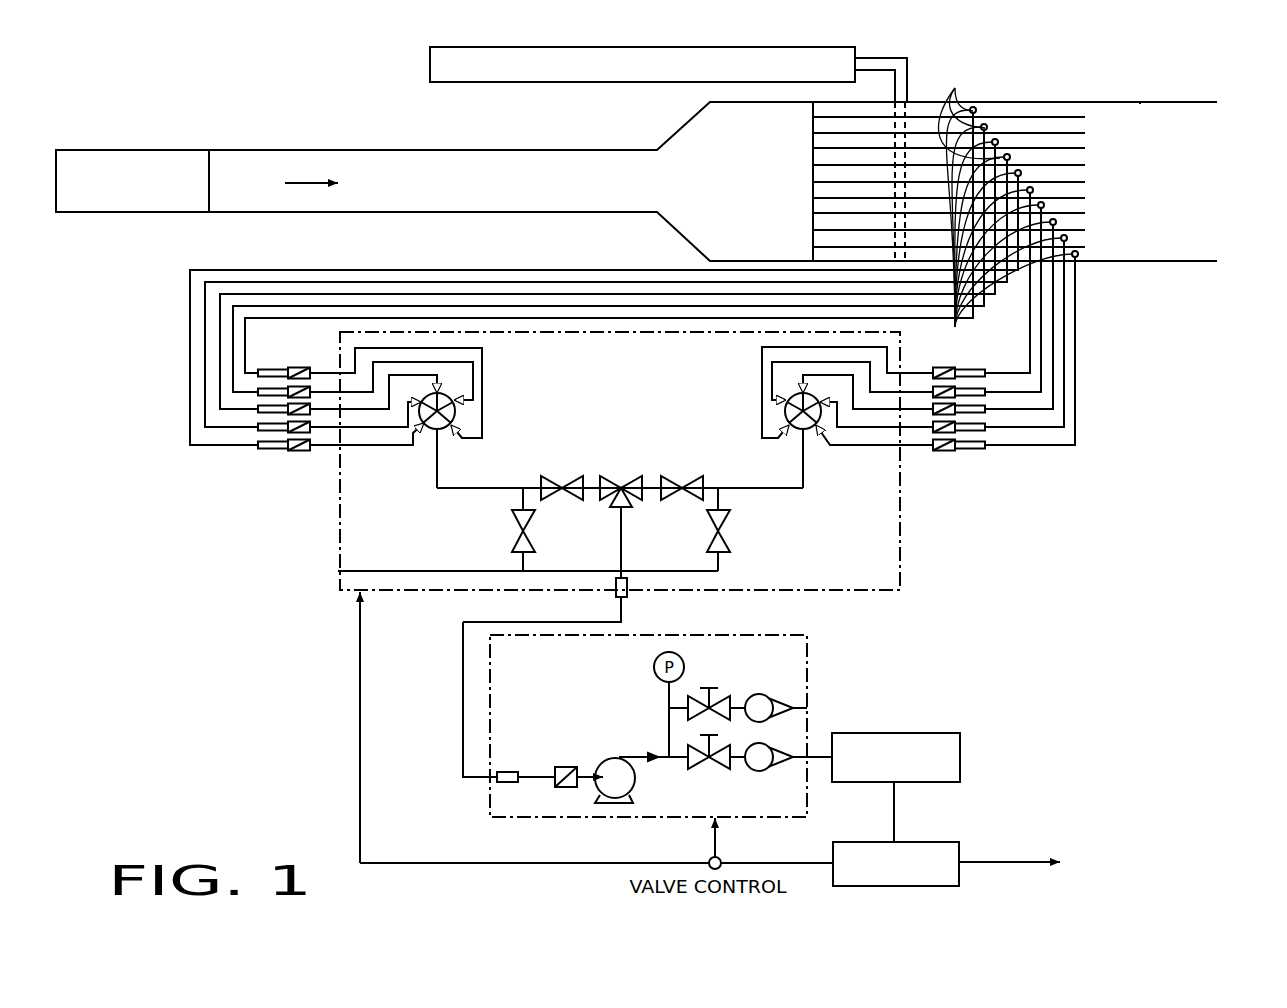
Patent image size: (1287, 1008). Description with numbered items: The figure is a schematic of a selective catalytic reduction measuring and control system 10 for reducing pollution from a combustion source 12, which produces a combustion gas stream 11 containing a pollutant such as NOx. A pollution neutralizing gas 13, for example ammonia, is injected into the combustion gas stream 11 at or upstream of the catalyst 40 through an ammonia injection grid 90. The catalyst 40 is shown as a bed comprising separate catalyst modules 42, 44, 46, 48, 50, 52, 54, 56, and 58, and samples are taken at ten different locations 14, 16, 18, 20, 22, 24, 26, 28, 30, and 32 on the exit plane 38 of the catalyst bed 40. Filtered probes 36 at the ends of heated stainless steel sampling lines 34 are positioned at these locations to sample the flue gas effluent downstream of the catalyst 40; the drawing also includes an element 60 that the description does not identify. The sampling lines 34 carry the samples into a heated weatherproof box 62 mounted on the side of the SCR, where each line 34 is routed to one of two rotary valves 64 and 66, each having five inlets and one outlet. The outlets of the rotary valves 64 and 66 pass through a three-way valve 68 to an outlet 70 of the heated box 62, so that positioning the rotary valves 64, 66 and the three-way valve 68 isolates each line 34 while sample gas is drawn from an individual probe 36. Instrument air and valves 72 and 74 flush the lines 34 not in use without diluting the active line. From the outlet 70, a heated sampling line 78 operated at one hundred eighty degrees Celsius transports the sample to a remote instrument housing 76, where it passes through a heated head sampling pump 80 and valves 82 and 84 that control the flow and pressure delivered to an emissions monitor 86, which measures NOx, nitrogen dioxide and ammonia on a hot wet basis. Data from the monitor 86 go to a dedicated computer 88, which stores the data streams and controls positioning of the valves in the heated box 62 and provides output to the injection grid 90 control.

The selective catalytic reduction measuring and control system 10 is at (947, 673).
The combustion gas stream 11 is at (362, 150).
The combustion source 12 is at (117, 150).
The pollution neutralizing gas 13 is at (430, 68).
The sampling location 14 is at (987, 112).
The sampling location 16 is at (998, 128).
The sampling location 18 is at (1010, 142).
The sampling location 20 is at (1022, 158).
The sampling location 22 is at (1033, 175).
The sampling location 24 is at (1045, 190).
The sampling location 26 is at (1056, 207).
The sampling location 28 is at (1068, 223).
The sampling location 30 is at (1080, 255).
The sampling location 32 is at (1087, 265).
The sampling lines 34 is at (220, 325).
The probes 36 is at (1008, 206).
The exit plane 38 is at (1050, 100).
The catalyst bed 40 is at (922, 100).
The catalyst module 42 is at (835, 108).
The catalyst module 44 is at (830, 127).
The catalyst module 46 is at (830, 140).
The catalyst module 48 is at (830, 157).
The catalyst module 50 is at (830, 173).
The catalyst module 52 is at (830, 189).
The catalyst module 54 is at (830, 205).
The catalyst module 56 is at (830, 222).
The catalyst module 58 is at (830, 240).
The duct wall 60 is at (823, 258).
The weatherproof box 62 is at (900, 513).
The rotary valve 64 is at (456, 408).
The rotary valve 66 is at (785, 412).
The three-way valve 68 is at (621, 487).
The outlet 70 is at (627, 593).
The valve 72 is at (525, 530).
The valve 74 is at (722, 542).
The remote instrument housing 76 is at (807, 680).
The heated sampling line 78 is at (452, 683).
The heated head sampling pump 80 is at (622, 753).
The valve 82 is at (725, 770).
The valve 84 is at (723, 698).
The emissions monitor 86 is at (960, 771).
The dedicated computer 88 is at (960, 850).
The ammonia injection grid 90 is at (902, 262).